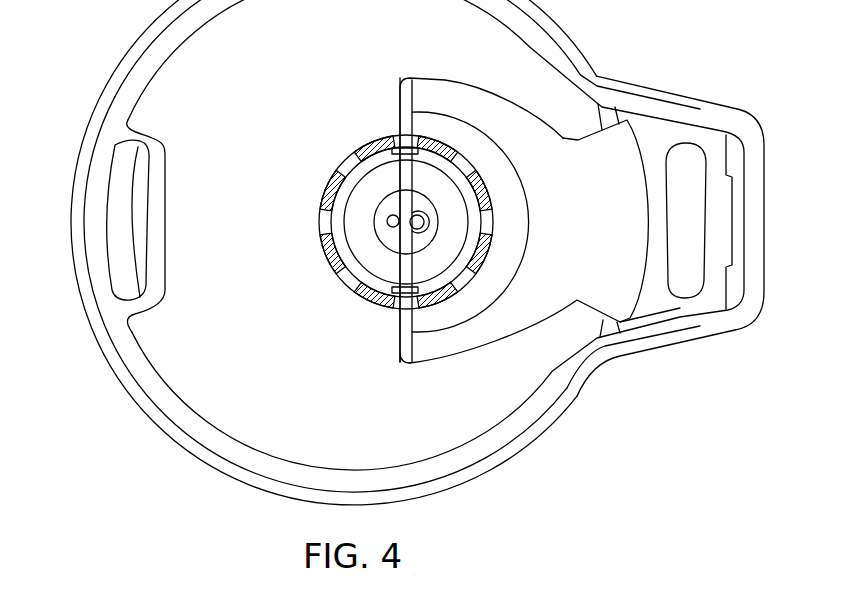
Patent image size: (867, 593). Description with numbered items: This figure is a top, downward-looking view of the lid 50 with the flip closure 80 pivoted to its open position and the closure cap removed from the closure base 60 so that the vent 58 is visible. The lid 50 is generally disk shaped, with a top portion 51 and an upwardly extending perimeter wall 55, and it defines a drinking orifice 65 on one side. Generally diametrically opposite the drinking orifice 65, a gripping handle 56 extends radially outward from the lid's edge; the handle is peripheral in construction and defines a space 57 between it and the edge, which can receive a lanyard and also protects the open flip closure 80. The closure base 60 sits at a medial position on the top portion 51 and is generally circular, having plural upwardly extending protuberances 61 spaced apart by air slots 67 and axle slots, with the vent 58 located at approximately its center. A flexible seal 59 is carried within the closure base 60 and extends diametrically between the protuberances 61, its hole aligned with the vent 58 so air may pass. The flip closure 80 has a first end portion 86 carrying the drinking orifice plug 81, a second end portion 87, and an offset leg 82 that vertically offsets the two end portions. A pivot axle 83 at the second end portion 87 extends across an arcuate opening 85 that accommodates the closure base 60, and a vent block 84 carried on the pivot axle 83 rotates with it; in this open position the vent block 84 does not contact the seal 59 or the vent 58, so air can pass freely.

The lid 50 is at (230, 476).
The top portion 51 is at (293, 347).
The perimeter wall 55 is at (181, 437).
The gripping handle 56 is at (747, 290).
The space 57 is at (687, 313).
The vent 58 is at (394, 221).
The flexible seal 59 is at (362, 215).
The closure base 60 is at (330, 186).
The protuberances 61 is at (377, 143).
The drinking orifice 65 is at (135, 173).
The air slots 67 is at (350, 162).
The flip closure 80 is at (540, 310).
The drinking orifice plug 81 is at (682, 160).
The offset leg 82 is at (642, 183).
The pivot axle 83 is at (403, 117).
The vent block 84 is at (419, 216).
The arcuate opening 85 is at (517, 217).
The first end portion 86 is at (712, 173).
The second end portion 87 is at (433, 97).